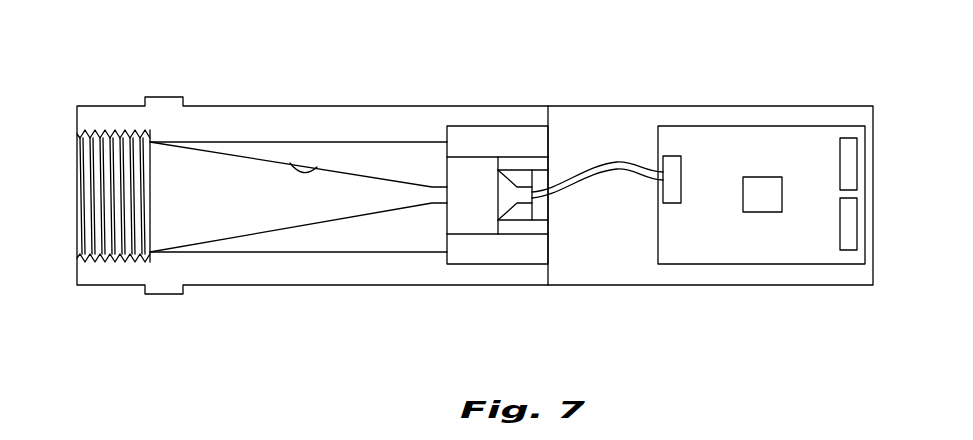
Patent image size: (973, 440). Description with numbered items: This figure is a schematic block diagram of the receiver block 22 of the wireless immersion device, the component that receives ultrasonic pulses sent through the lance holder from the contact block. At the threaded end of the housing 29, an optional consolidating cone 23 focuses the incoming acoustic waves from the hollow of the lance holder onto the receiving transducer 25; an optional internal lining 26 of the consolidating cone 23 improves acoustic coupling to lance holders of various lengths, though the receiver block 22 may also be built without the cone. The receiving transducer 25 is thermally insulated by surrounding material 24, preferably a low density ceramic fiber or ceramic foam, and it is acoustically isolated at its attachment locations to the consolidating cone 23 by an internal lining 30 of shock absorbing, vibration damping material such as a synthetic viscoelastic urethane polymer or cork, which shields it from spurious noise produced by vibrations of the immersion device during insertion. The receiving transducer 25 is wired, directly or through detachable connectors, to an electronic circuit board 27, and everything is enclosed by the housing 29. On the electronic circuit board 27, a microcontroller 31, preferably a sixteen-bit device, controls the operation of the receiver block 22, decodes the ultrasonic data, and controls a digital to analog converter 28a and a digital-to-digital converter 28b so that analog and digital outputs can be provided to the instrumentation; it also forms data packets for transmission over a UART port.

The receiver block 22 is at (701, 326).
The consolidating cone 23 is at (252, 150).
The surrounding material 24 is at (472, 140).
The receiving transducer 25 is at (530, 185).
The internal lining 26 is at (317, 167).
The electronic circuit board 27 is at (752, 148).
The digital to analog converter 28a is at (848, 165).
The digital-to-digital converter 28b is at (848, 223).
The housing 29 is at (793, 285).
The internal lining 30 is at (510, 160).
The microcontroller 31 is at (773, 190).